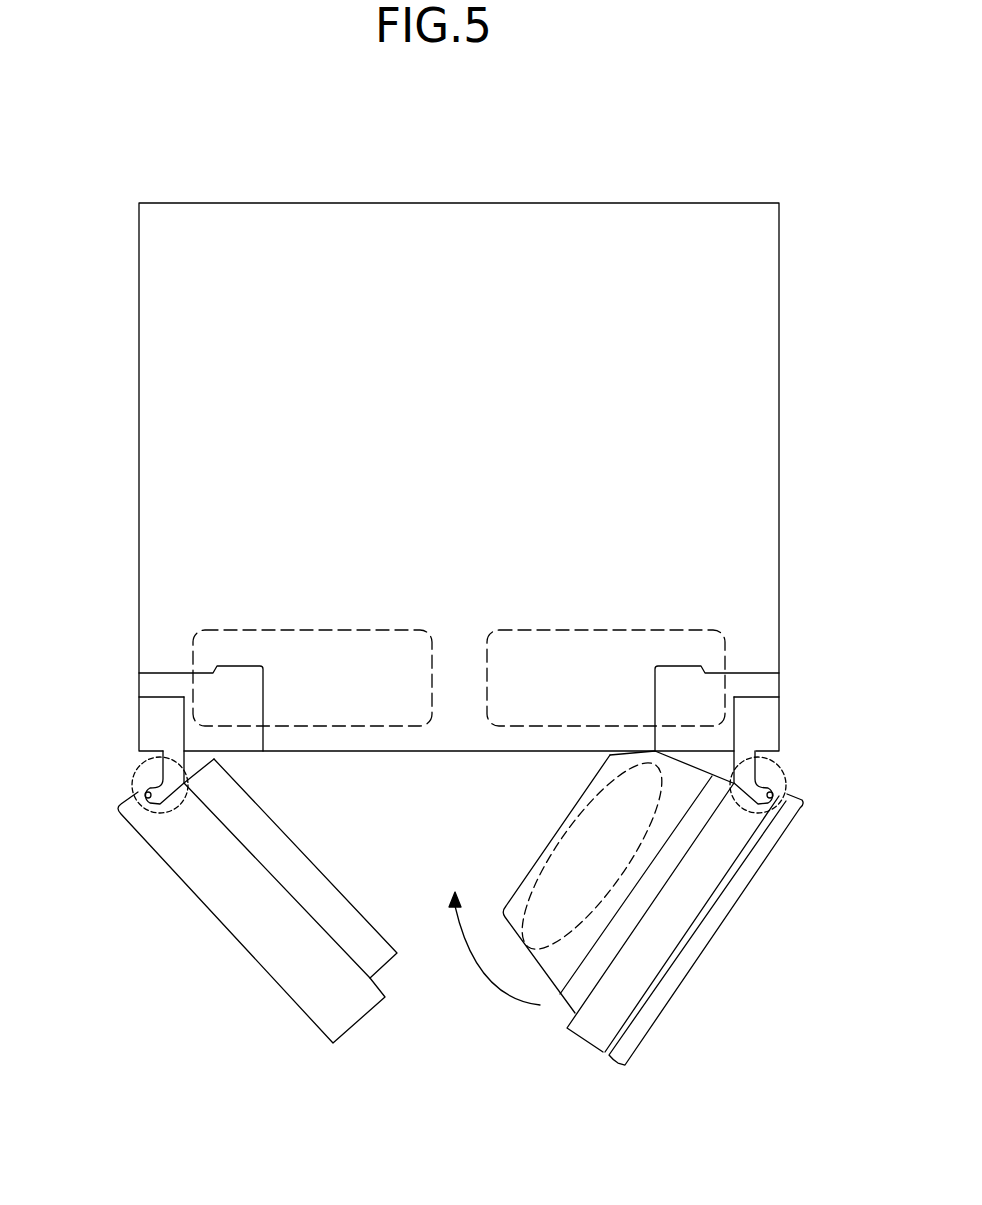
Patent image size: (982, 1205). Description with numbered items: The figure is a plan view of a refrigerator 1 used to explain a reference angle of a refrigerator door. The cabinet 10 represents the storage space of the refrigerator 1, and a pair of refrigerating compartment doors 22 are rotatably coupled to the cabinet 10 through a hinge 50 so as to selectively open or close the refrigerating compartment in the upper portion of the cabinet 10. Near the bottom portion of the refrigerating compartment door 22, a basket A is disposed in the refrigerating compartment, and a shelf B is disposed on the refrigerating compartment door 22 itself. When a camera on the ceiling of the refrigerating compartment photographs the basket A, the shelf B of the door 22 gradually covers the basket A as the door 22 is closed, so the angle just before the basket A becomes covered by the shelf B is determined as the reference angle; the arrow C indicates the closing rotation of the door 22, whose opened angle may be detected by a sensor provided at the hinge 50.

The refrigerator 1 is at (467, 186).
The cabinet 10 is at (780, 384).
The refrigerating compartment door 22 is at (183, 881).
The hinge 50 is at (131, 781).
The basket A is at (193, 653).
The shelf B is at (533, 868).
The door opening direction C is at (502, 993).